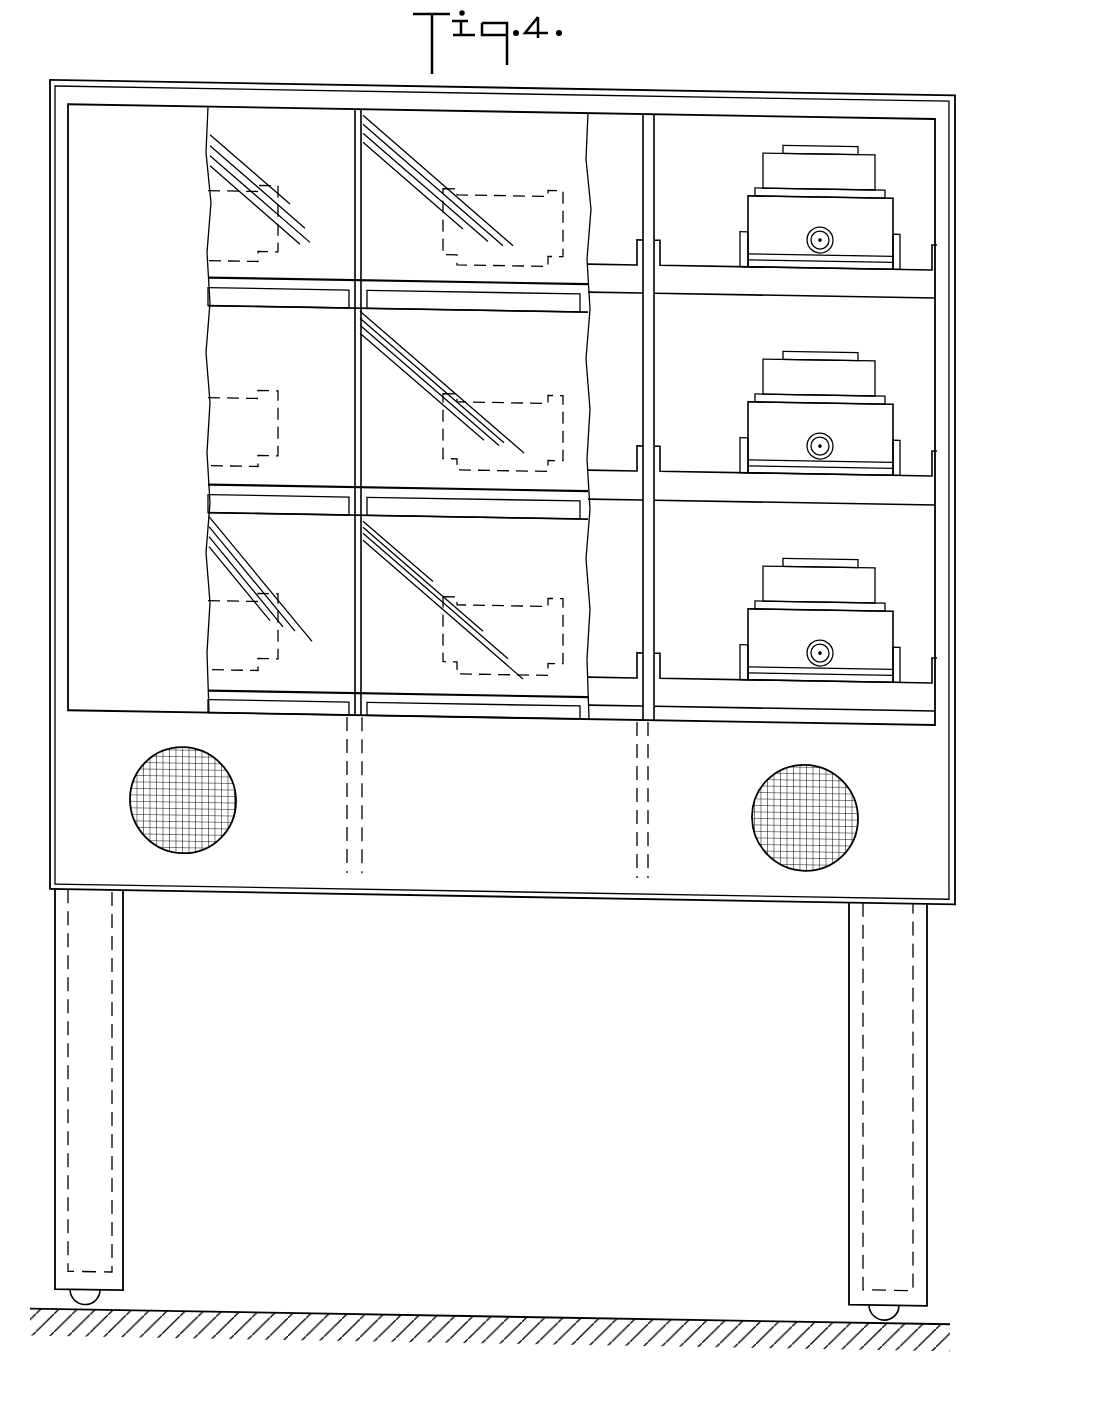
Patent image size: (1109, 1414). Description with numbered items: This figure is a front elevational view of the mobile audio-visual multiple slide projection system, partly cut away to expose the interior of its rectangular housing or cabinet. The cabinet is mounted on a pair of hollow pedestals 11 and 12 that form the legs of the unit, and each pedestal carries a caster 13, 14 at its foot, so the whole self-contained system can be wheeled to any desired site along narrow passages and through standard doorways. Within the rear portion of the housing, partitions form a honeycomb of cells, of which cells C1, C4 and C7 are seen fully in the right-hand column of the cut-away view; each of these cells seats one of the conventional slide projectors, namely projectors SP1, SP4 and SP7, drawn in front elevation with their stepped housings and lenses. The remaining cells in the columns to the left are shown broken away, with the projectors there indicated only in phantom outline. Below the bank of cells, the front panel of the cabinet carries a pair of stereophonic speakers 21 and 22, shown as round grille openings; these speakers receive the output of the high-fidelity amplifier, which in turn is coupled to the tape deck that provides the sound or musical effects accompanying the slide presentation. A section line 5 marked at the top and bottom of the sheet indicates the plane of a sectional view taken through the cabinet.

The section line 5- 5 is at (910, 50).
The hollow pedestal 11 is at (115, 1003).
The hollow pedestal 12 is at (858, 1040).
The caster 13 is at (95, 1302).
The caster 14 is at (875, 1298).
The stereophonic speaker 21 is at (195, 841).
The stereophonic speaker 22 is at (790, 843).
The cell C1 is at (714, 152).
The cell C4 is at (714, 354).
The cell C7 is at (714, 542).
The slide projector SP1 is at (867, 167).
The slide projector SP4 is at (863, 365).
The slide projector SP7 is at (860, 567).